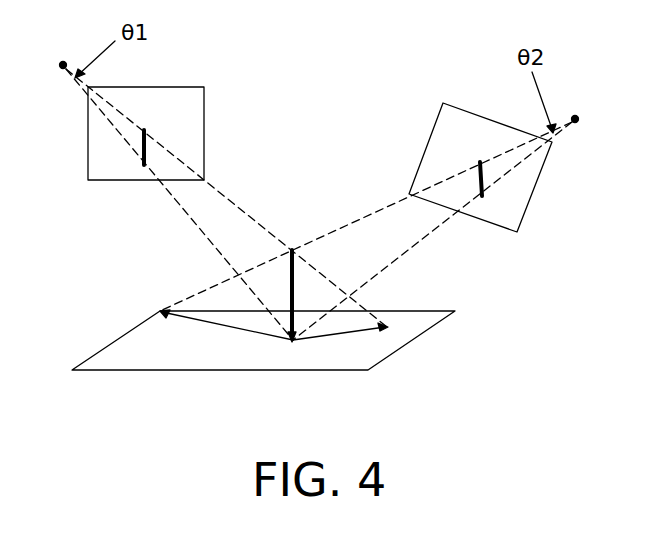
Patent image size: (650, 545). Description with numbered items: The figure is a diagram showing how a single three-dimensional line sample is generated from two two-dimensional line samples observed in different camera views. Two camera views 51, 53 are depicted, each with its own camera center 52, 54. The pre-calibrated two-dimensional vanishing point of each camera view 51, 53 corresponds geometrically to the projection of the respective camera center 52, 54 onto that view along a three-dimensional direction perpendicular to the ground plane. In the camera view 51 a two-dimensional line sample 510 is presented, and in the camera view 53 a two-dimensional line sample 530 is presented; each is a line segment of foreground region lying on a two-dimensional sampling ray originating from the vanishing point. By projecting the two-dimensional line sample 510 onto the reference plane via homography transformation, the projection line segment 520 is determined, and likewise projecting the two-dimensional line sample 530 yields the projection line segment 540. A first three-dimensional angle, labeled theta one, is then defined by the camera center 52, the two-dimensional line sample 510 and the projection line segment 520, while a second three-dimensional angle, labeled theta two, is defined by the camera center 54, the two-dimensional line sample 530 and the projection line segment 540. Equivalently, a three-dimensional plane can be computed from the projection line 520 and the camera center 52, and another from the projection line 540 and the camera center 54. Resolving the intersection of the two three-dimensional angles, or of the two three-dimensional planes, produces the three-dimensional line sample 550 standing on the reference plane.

The camera view 51 is at (204, 110).
The 2D line sample 510 is at (143, 163).
The camera center 52 is at (42, 65).
The camera view 53 is at (537, 186).
The 2D line sample 530 is at (476, 163).
The camera center 54 is at (601, 113).
The projection line segment 520 is at (378, 330).
The projection line segment 540 is at (187, 320).
The 3D line sample 550 is at (288, 323).